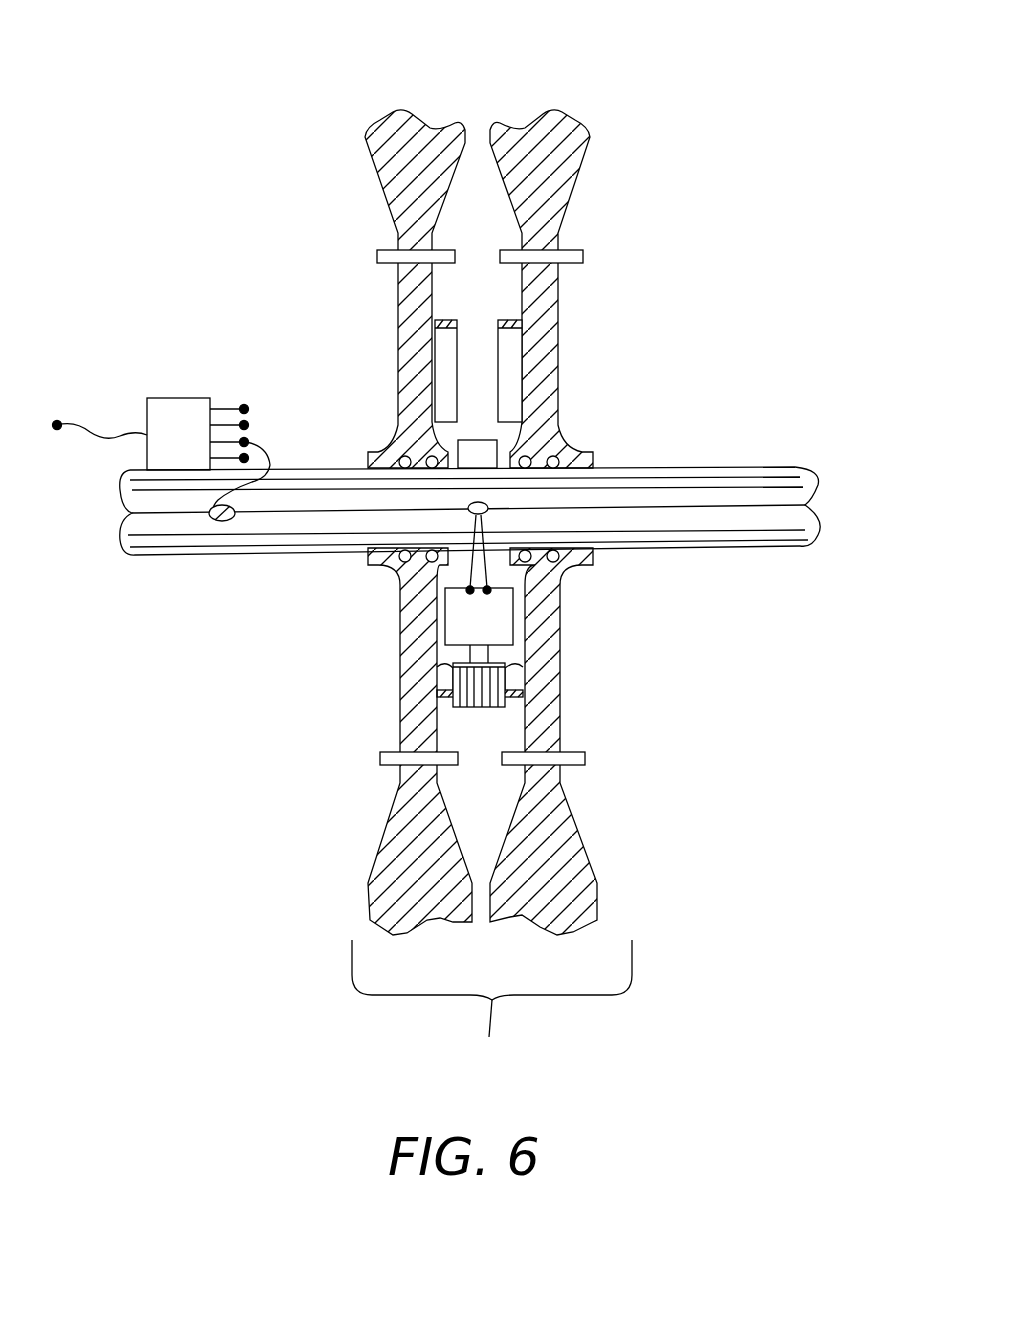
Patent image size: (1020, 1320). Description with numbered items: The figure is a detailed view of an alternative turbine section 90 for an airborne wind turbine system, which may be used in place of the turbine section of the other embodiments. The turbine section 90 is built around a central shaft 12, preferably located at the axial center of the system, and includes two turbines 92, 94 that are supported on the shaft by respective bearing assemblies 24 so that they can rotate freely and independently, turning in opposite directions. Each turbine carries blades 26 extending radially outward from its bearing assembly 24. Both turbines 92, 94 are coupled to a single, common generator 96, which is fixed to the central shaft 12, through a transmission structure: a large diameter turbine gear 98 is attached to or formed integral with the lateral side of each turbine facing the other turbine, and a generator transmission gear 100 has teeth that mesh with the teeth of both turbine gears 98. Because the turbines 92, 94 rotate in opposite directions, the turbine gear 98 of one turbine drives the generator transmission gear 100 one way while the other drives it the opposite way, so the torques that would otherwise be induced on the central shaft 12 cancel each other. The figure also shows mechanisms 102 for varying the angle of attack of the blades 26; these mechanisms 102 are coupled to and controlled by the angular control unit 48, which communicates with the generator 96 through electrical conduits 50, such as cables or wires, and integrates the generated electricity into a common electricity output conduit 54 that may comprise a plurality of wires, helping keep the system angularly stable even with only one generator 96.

The central shaft 12 is at (757, 467).
The bearing assembly 24 is at (593, 448).
The blades 26 is at (395, 110).
The angular control unit 48 is at (196, 398).
The electrical conduits 50 is at (265, 450).
The common electricity output conduit 54 is at (57, 425).
The turbine section 90 is at (492, 1007).
The turbine 92 is at (383, 668).
The turbine 94 is at (573, 643).
The generator 96 is at (513, 620).
The turbine gear 98 is at (520, 320).
The generator transmission gear 100 is at (483, 707).
The mechanisms for varying the angle of attack 102 is at (377, 257).